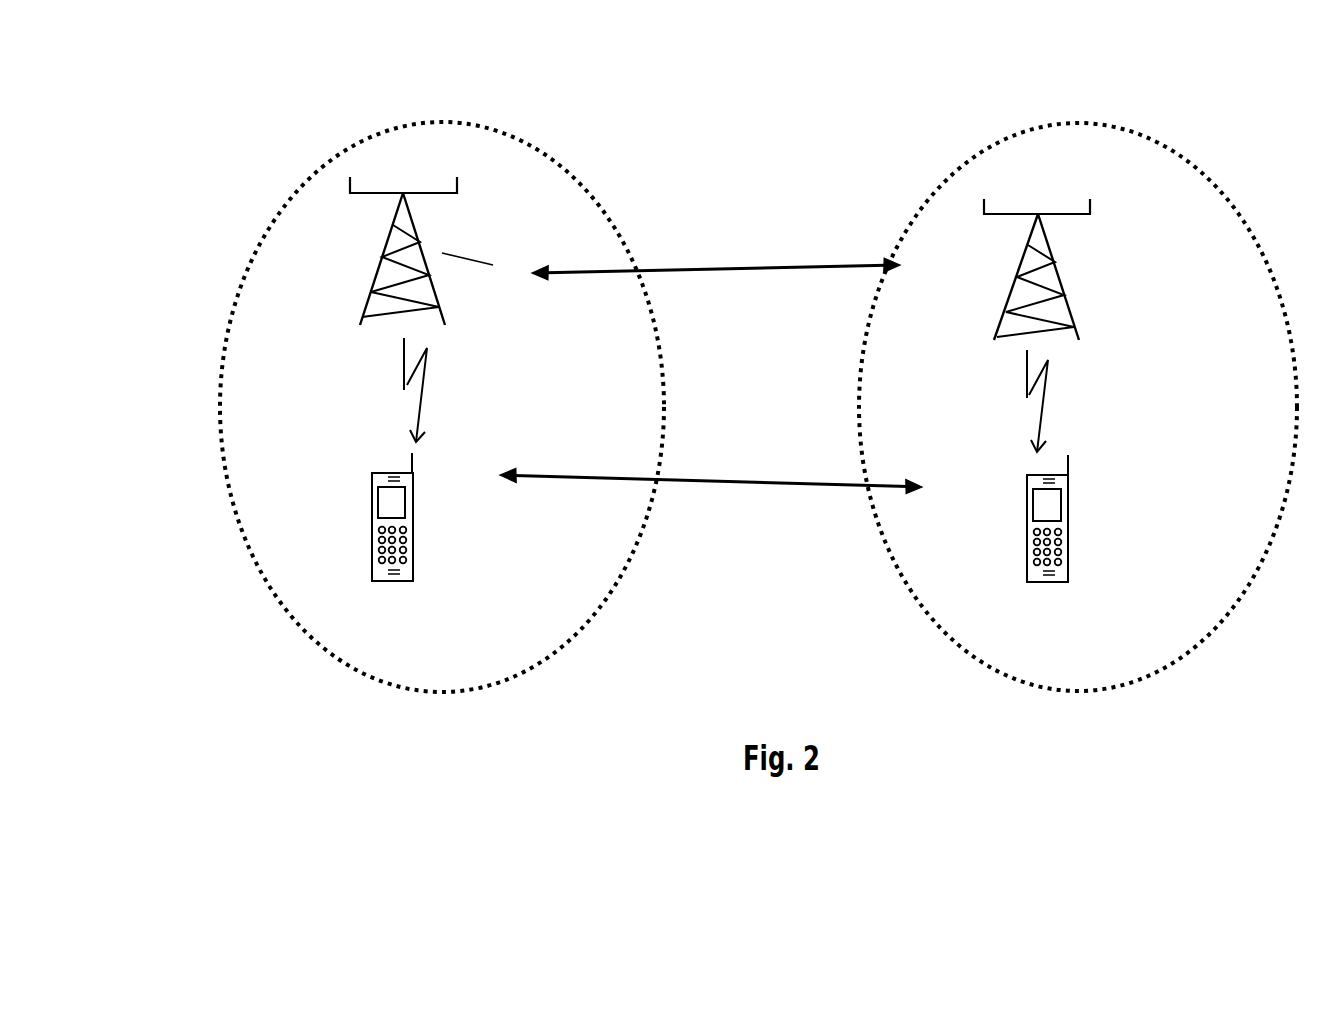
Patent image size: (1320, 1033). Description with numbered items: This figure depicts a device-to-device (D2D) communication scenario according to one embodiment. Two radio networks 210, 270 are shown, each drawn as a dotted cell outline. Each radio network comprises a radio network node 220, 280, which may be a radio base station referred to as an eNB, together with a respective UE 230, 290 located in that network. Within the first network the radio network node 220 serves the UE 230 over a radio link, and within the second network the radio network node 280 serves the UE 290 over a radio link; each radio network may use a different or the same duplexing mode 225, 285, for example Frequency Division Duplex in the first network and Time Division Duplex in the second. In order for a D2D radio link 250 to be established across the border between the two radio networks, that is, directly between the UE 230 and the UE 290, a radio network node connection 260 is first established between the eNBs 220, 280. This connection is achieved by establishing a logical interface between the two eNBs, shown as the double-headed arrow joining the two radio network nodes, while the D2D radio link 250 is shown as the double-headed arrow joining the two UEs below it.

The radio network 210 is at (478, 112).
The radio network node 220 is at (414, 251).
The duplexing mode 225 is at (504, 392).
The UE 230 is at (404, 592).
The D2D radio link 250 is at (711, 543).
The radio network node connection 260 is at (716, 199).
The radio network 270 is at (1108, 115).
The radio network node 280 is at (1088, 305).
The duplexing mode 285 is at (1130, 401).
The UE 290 is at (1057, 593).